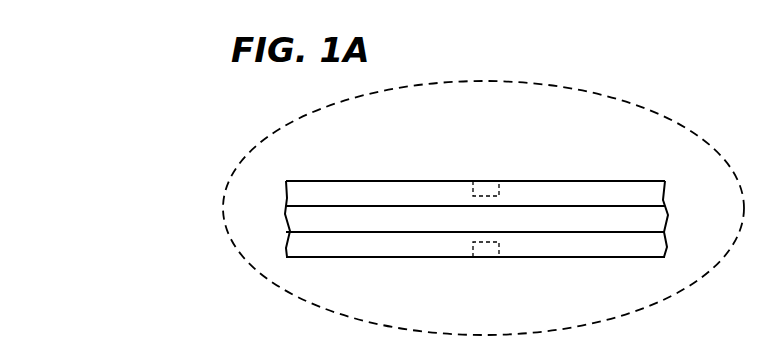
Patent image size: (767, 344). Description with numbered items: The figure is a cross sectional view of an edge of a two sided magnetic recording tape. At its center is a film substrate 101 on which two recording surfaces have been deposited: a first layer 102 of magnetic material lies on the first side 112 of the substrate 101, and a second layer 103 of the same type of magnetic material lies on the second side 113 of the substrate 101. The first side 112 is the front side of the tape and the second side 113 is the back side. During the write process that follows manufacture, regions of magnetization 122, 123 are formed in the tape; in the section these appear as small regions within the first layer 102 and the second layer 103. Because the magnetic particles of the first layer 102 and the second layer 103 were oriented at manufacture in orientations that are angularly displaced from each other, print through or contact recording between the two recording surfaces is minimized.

The film substrate 101 is at (323, 217).
The first layer 102 is at (406, 240).
The second layer 103 is at (382, 197).
The first side 112 is at (620, 232).
The second side 113 is at (602, 205).
The region of magnetization 122 is at (487, 247).
The region of magnetization 123 is at (487, 188).